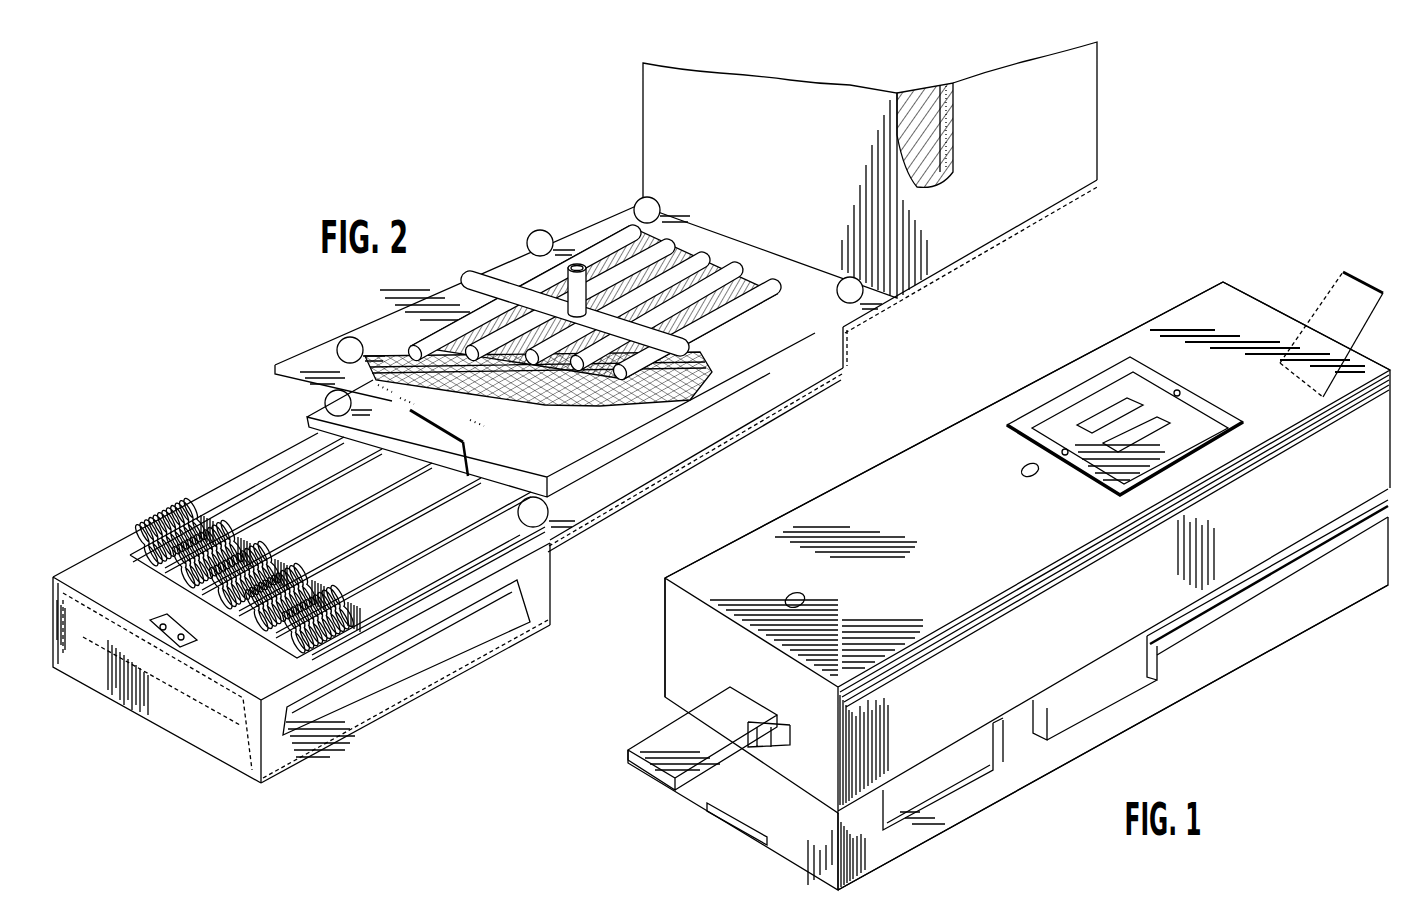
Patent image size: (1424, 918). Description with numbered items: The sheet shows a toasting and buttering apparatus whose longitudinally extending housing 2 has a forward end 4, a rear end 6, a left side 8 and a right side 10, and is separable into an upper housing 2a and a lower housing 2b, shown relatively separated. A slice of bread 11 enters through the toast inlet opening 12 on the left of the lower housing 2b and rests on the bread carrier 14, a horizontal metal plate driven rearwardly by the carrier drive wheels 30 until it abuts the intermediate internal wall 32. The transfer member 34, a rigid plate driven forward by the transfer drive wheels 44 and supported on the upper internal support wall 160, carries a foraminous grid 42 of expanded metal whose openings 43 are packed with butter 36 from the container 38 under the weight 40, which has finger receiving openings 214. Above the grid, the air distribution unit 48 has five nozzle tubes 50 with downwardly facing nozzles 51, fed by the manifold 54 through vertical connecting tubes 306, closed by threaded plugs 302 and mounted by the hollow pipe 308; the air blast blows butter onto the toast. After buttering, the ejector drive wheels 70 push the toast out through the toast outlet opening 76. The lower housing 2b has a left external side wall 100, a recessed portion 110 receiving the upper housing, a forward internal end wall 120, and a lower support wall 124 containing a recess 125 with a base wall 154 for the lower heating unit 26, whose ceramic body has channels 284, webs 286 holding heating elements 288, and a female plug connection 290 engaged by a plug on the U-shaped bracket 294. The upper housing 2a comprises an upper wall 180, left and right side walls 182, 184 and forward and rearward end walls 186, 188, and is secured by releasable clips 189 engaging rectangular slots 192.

In FIG. 1, the housing 2 is at (646, 689).
In FIG. 1, the upper housing 2a is at (1223, 285).
In FIG. 1, the lower housing 2b is at (1300, 614).
In FIG. 1, the forward end 4 is at (775, 853).
In FIG. 1, the rear end 6 is at (1268, 300).
In FIG. 1, the left side 8 is at (1194, 692).
In FIG. 1, the right side 10 is at (963, 413).
In FIG. 2, the slice of bread 11 is at (660, 433).
In FIG. 1, the toast inlet opening 12 is at (928, 781).
In FIG. 2, the bread carrier 14 is at (572, 508).
In FIG. 2, the lower heating unit 26 is at (393, 640).
In FIG. 2, the carrier drive wheels 30 is at (551, 567).
In FIG. 2, the intermediate internal wall 32 is at (845, 347).
In FIG. 2, the transfer member 34 is at (765, 397).
In FIG. 2, the butter 36 is at (922, 97).
In FIG. 2, the container 38 is at (945, 210).
In FIG. 1, the container 38 is at (1080, 389).
In FIG. 1, the weight 40 is at (1191, 426).
In FIG. 2, the foraminous grid 42 is at (790, 350).
In FIG. 2, the openings 43 is at (441, 371).
In FIG. 2, the transfer drive wheels 44 is at (865, 299).
In FIG. 2, the air distribution unit 48 is at (510, 279).
In FIG. 2, the nozzle tubes 50 is at (753, 275).
In FIG. 2, the nozzles 51 is at (408, 349).
In FIG. 2, the manifold 54 is at (476, 272).
In FIG. 2, the ejector drive wheels 70 is at (536, 231).
In FIG. 1, the toast outlet opening 76 is at (1085, 692).
In FIG. 1, the left external side wall 100 is at (933, 830).
In FIG. 1, the recessed portion 110 is at (883, 832).
In FIG. 2, the forward internal end wall 120 is at (259, 780).
In FIG. 2, the lower support wall 124 is at (634, 487).
In FIG. 2, the recess 125 is at (357, 703).
In FIG. 2, the base wall 154 is at (347, 730).
In FIG. 2, the upper internal support wall 160 is at (982, 248).
In FIG. 1, the upper wall 180 is at (818, 524).
In FIG. 1, the left side wall 182 is at (1220, 573).
In FIG. 1, the right side wall 184 is at (698, 571).
In FIG. 1, the forward end wall 186 is at (673, 620).
In FIG. 1, the rearward end wall 188 is at (1368, 361).
In FIG. 1, the releasable clips 189 is at (1342, 271).
In FIG. 1, the rectangular slots 192 is at (726, 814).
In FIG. 1, the finger receiving openings 214 is at (1131, 405).
In FIG. 2, the channels 284 is at (210, 520).
In FIG. 2, the webs 286 is at (180, 543).
In FIG. 2, the heating elements 288 is at (250, 629).
In FIG. 2, the female plug connection 290 is at (163, 618).
In FIG. 1, the U-shaped bracket 294 is at (764, 744).
In FIG. 2, the threaded plugs 302 is at (704, 268).
In FIG. 2, the vertical connecting tubes 306 is at (600, 372).
In FIG. 2, the hollow pipe 308 is at (577, 263).